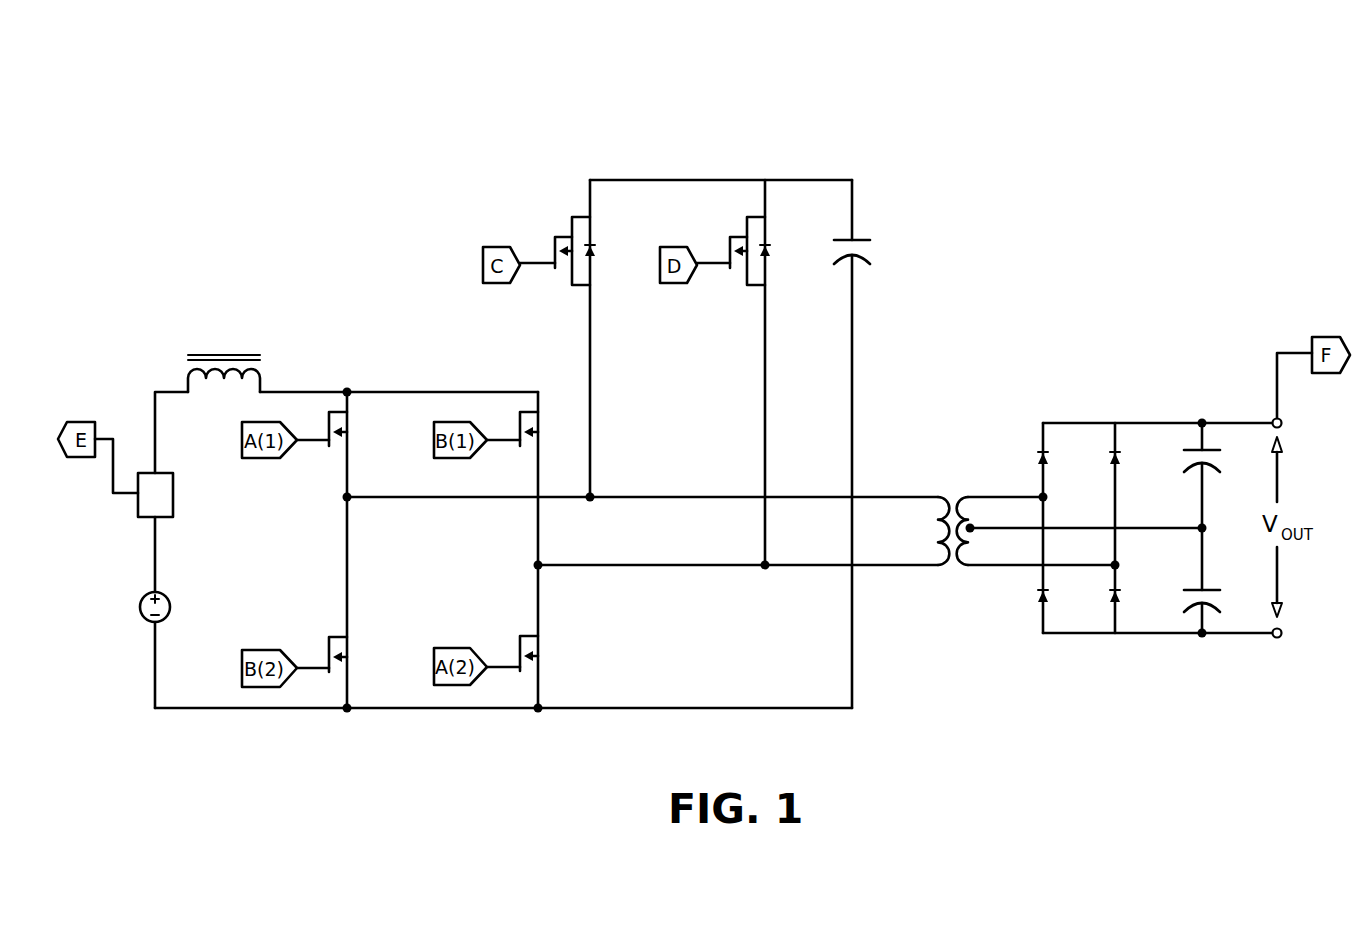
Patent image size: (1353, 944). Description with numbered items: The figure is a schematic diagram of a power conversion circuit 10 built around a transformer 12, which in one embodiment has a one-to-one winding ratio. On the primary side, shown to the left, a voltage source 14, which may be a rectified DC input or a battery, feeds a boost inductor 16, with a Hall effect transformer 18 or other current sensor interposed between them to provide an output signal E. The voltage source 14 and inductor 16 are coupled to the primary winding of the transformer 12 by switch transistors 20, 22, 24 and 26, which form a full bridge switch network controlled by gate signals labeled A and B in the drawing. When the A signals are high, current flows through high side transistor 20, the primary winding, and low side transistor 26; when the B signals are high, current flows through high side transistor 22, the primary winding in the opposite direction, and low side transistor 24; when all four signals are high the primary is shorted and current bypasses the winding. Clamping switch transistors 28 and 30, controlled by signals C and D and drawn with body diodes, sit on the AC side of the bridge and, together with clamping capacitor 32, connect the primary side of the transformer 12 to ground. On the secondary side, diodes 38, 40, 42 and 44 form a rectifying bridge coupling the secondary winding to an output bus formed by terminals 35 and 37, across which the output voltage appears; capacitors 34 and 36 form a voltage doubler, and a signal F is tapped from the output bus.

The power conversion circuit 10 is at (236, 212).
The transformer 12 is at (954, 514).
The voltage source 14 is at (140, 607).
The boost inductor 16 is at (224, 356).
The Hall effect transformer 18 is at (155, 495).
The switch transistor 20 is at (341, 429).
The switch transistor 22 is at (531, 429).
The switch transistor 24 is at (341, 654).
The switch transistor 26 is at (531, 653).
The clamping switch transistor 28 is at (575, 251).
The clamping switch transistor 30 is at (753, 251).
The clamping capacitor 32 is at (874, 444).
The capacitor 34 is at (1218, 475).
The terminal 35 is at (1296, 423).
The capacitor 36 is at (1220, 580).
The terminal 37 is at (1296, 633).
The diode 38 is at (1060, 460).
The diode 40 is at (1135, 460).
The diode 42 is at (1060, 598).
The diode 44 is at (1135, 598).